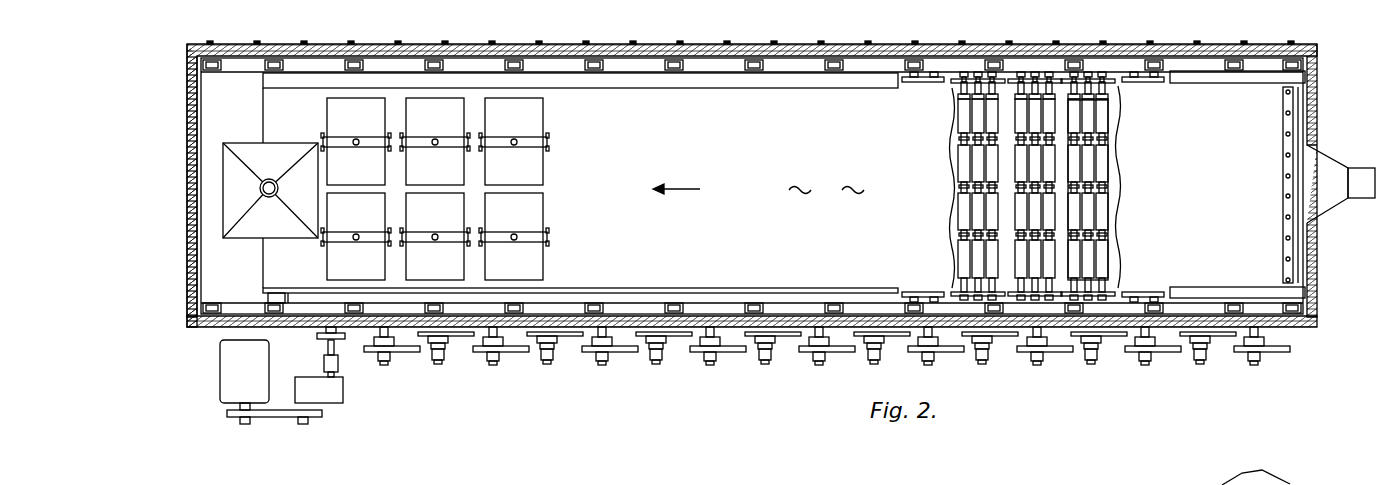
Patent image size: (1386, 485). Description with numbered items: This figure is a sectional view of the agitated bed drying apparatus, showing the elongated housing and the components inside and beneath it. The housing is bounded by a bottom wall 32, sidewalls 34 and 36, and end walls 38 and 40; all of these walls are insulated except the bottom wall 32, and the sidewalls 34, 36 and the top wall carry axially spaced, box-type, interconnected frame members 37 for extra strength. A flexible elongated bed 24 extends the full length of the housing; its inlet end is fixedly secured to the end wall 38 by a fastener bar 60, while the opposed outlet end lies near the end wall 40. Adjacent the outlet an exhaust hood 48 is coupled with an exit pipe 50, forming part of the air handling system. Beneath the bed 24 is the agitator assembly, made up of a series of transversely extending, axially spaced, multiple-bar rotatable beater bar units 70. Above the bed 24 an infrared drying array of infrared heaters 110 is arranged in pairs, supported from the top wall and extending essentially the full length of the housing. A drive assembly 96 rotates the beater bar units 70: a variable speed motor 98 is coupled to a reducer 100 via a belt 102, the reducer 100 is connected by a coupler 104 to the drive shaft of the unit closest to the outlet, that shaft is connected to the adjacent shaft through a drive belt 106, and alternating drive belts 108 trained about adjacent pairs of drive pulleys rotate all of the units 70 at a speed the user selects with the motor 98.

The flexible elongated bed 24 is at (758, 190).
The bottom wall 32 is at (1063, 109).
The sidewall 34 is at (745, 46).
The sidewall 36 is at (741, 331).
The frame members 37 is at (753, 70).
The end wall 38 is at (1320, 80).
The end wall 40 is at (189, 149).
The exhaust hood 48 is at (274, 148).
The exit pipe 50 is at (268, 180).
The fastener bar 60 is at (1291, 167).
The beater bar units 70 is at (1017, 58).
The drive assembly 96 is at (269, 394).
The variable speed motor 98 is at (227, 355).
The reducer 100 is at (337, 400).
The belt 102 is at (277, 420).
The coupler 104 is at (340, 363).
The drive belt 106 is at (398, 338).
The alternating drive belts 108 is at (455, 352).
The infrared heaters 110 is at (536, 118).